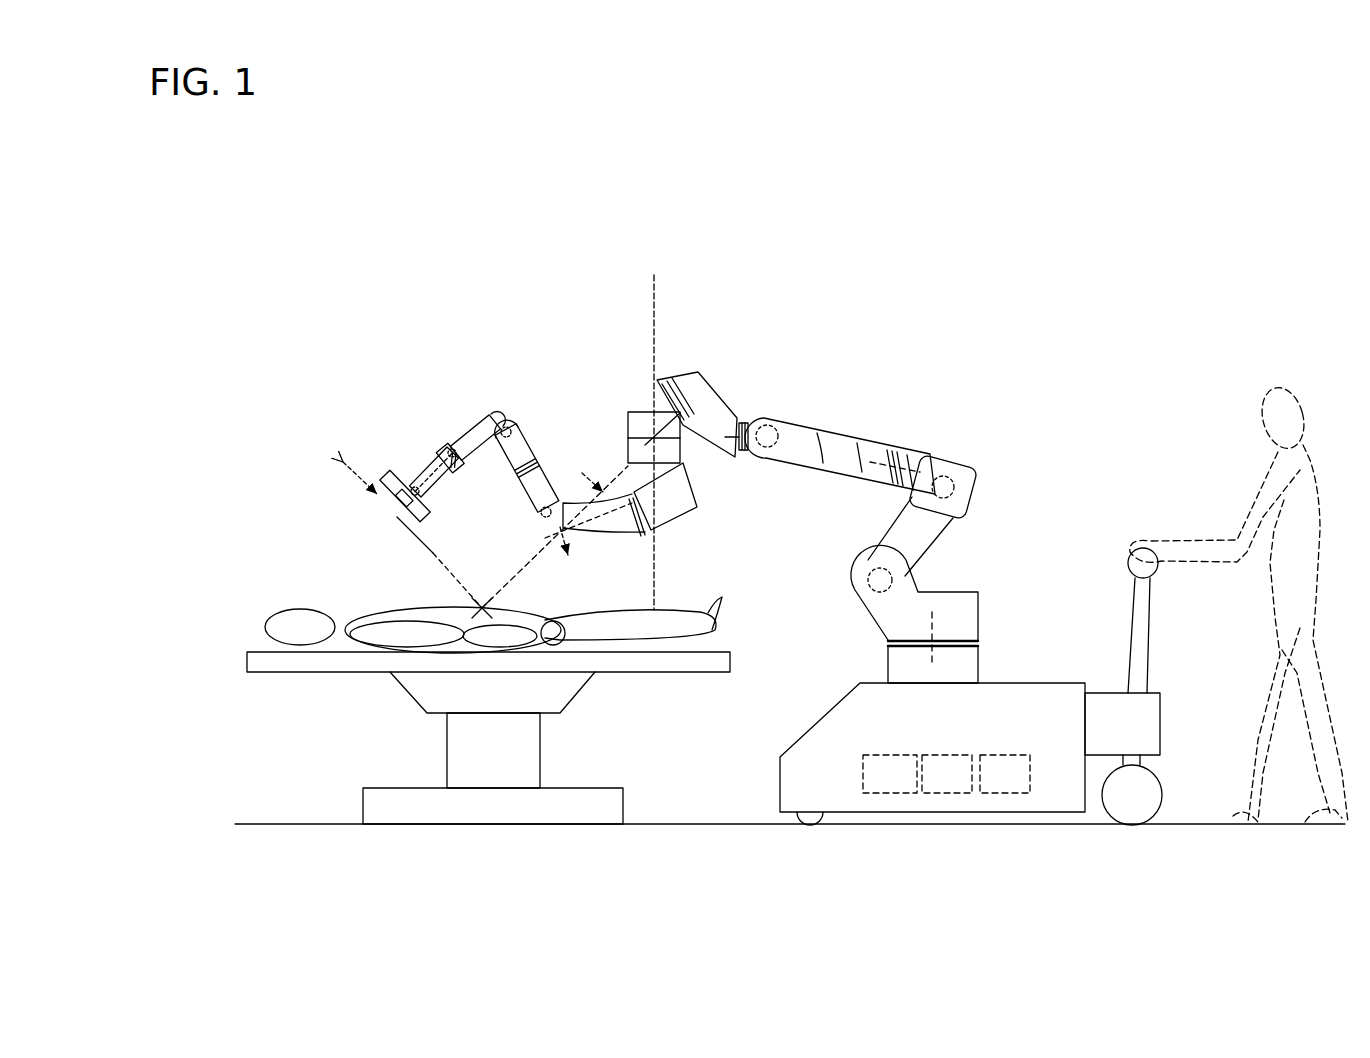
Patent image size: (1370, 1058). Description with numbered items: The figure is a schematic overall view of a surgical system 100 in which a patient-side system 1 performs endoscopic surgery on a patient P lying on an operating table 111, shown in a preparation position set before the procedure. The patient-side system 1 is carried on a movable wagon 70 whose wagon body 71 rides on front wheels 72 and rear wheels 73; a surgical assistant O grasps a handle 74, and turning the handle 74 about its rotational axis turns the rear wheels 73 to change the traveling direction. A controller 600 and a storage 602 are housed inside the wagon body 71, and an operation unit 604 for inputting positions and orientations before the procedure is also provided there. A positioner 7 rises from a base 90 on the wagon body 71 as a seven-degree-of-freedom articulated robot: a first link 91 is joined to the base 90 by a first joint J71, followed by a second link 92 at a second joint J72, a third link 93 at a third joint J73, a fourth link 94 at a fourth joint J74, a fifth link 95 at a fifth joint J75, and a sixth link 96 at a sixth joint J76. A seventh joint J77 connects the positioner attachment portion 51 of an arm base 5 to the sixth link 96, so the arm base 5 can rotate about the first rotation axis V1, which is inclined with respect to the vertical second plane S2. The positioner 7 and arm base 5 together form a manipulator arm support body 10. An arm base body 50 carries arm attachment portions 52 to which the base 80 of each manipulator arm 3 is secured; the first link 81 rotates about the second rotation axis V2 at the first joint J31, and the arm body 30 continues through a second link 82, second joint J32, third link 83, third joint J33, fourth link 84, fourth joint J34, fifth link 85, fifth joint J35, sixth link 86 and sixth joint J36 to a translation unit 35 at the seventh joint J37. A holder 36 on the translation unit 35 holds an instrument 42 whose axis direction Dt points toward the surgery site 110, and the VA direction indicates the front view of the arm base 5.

The patient-side system 1 is at (557, 247).
The surgical system 100 is at (1060, 242).
The manipulator arm 3 is at (415, 365).
The arm base 5 is at (618, 380).
The positioner 7 is at (940, 402).
The manipulator arm support body 10 is at (725, 302).
The arm body 30 is at (507, 362).
The translation unit 35 is at (382, 470).
The holder 36 is at (385, 506).
The instrument 42 is at (407, 548).
The arm base body 50 is at (633, 440).
The positioner attachment portion 51 is at (690, 432).
The arm attachment portion 52 is at (680, 525).
The wagon 70 is at (808, 718).
The wagon body 71 is at (790, 786).
The front wheel 72 is at (812, 822).
The rear wheel 73 is at (1132, 825).
The handle 74 is at (1130, 565).
The base 80 is at (688, 522).
The first link 81 is at (626, 522).
The second link 82 is at (533, 482).
The third link 83 is at (521, 436).
The fourth link 84 is at (493, 410).
The fifth link 85 is at (480, 455).
The sixth link 86 is at (440, 482).
The base 90 is at (962, 665).
The first link 91 is at (868, 622).
The second link 92 is at (900, 528).
The third link 93 is at (943, 465).
The fourth link 94 is at (840, 430).
The fifth link 95 is at (750, 450).
The sixth link 96 is at (712, 375).
The surgery site 110 is at (482, 598).
The operating table 111 is at (722, 665).
The controller 600 is at (890, 793).
The storage 602 is at (946, 793).
The operation unit 604 is at (1002, 793).
The first joint J31 is at (641, 527).
The second joint J32 is at (538, 516).
The third joint J33 is at (542, 462).
The fourth joint J34 is at (514, 425).
The fifth joint J35 is at (466, 430).
The sixth joint J36 is at (445, 447).
The seventh joint J37 is at (413, 483).
The first joint J71 is at (990, 645).
The second joint J72 is at (917, 585).
The third joint J73 is at (978, 497).
The fourth joint J74 is at (900, 450).
The fifth joint J75 is at (770, 418).
The sixth joint J76 is at (743, 415).
The seventh joint J77 is at (664, 378).
The second plane S2 is at (654, 276).
The first rotation axis V1 is at (555, 528).
The second rotation axis V2 is at (570, 561).
The axis direction Dt is at (348, 486).
The VA direction VA is at (300, 430).
The patient P is at (267, 632).
The ground G is at (300, 822).
The surgical assistant O is at (1275, 385).